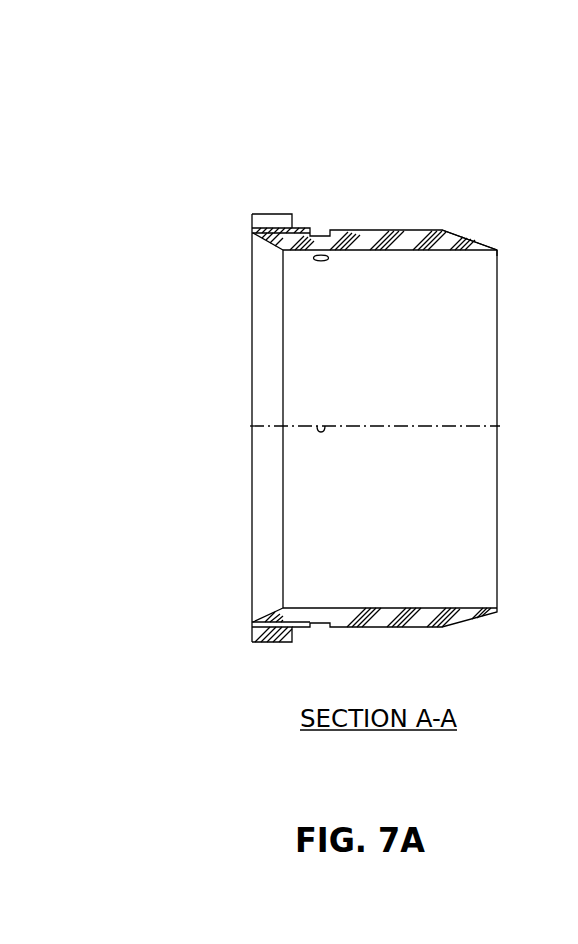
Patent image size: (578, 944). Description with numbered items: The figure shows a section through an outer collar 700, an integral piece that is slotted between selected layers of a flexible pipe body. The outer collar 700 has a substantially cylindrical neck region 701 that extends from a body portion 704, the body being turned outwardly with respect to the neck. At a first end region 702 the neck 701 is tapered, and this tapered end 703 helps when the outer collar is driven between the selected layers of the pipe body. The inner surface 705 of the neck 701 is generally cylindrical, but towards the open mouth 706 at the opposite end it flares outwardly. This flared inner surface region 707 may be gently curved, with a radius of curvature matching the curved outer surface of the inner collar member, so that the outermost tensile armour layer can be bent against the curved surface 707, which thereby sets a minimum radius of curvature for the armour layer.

The outer collar 700 is at (392, 125).
The neck region 701 is at (372, 627).
The first end region 702 is at (510, 682).
The tapered end 703 is at (480, 242).
The body portion 704 is at (273, 642).
The inner surface 705 is at (385, 250).
The open mouth 706 is at (160, 378).
The inner surface region 707 is at (275, 608).